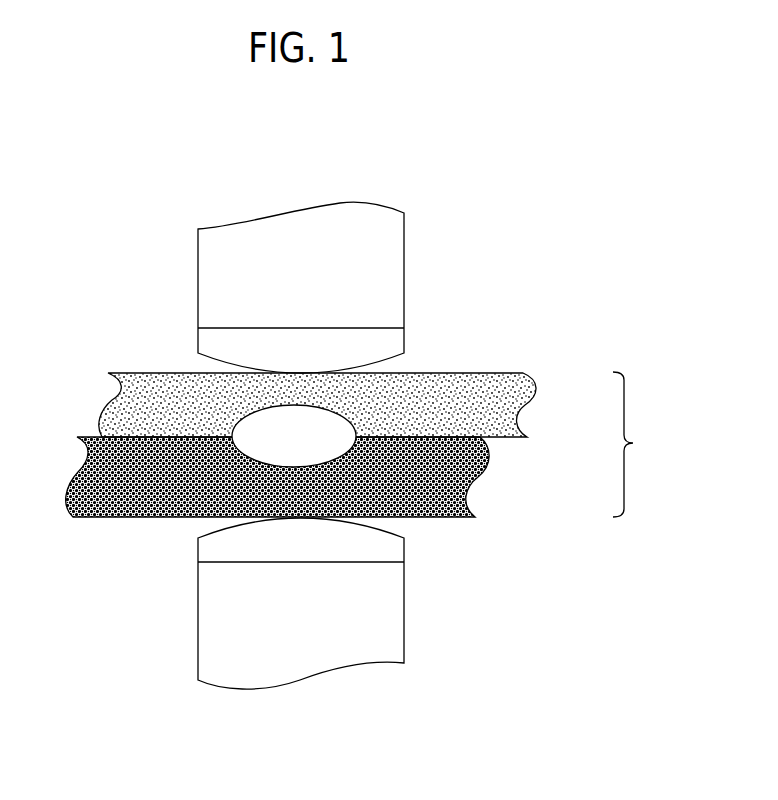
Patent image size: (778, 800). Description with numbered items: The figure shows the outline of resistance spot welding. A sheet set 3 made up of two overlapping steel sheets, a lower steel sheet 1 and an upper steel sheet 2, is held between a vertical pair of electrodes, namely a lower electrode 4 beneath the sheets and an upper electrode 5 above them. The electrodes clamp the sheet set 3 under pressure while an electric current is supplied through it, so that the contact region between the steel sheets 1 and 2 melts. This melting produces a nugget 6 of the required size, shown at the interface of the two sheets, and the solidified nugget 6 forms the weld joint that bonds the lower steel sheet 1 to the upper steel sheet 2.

The lower steel sheet 1 is at (478, 477).
The upper steel sheet 2 is at (532, 398).
The sheet set 3 is at (635, 444).
The lower electrode 4 is at (404, 613).
The upper electrode 5 is at (404, 294).
The nugget 6 is at (266, 465).